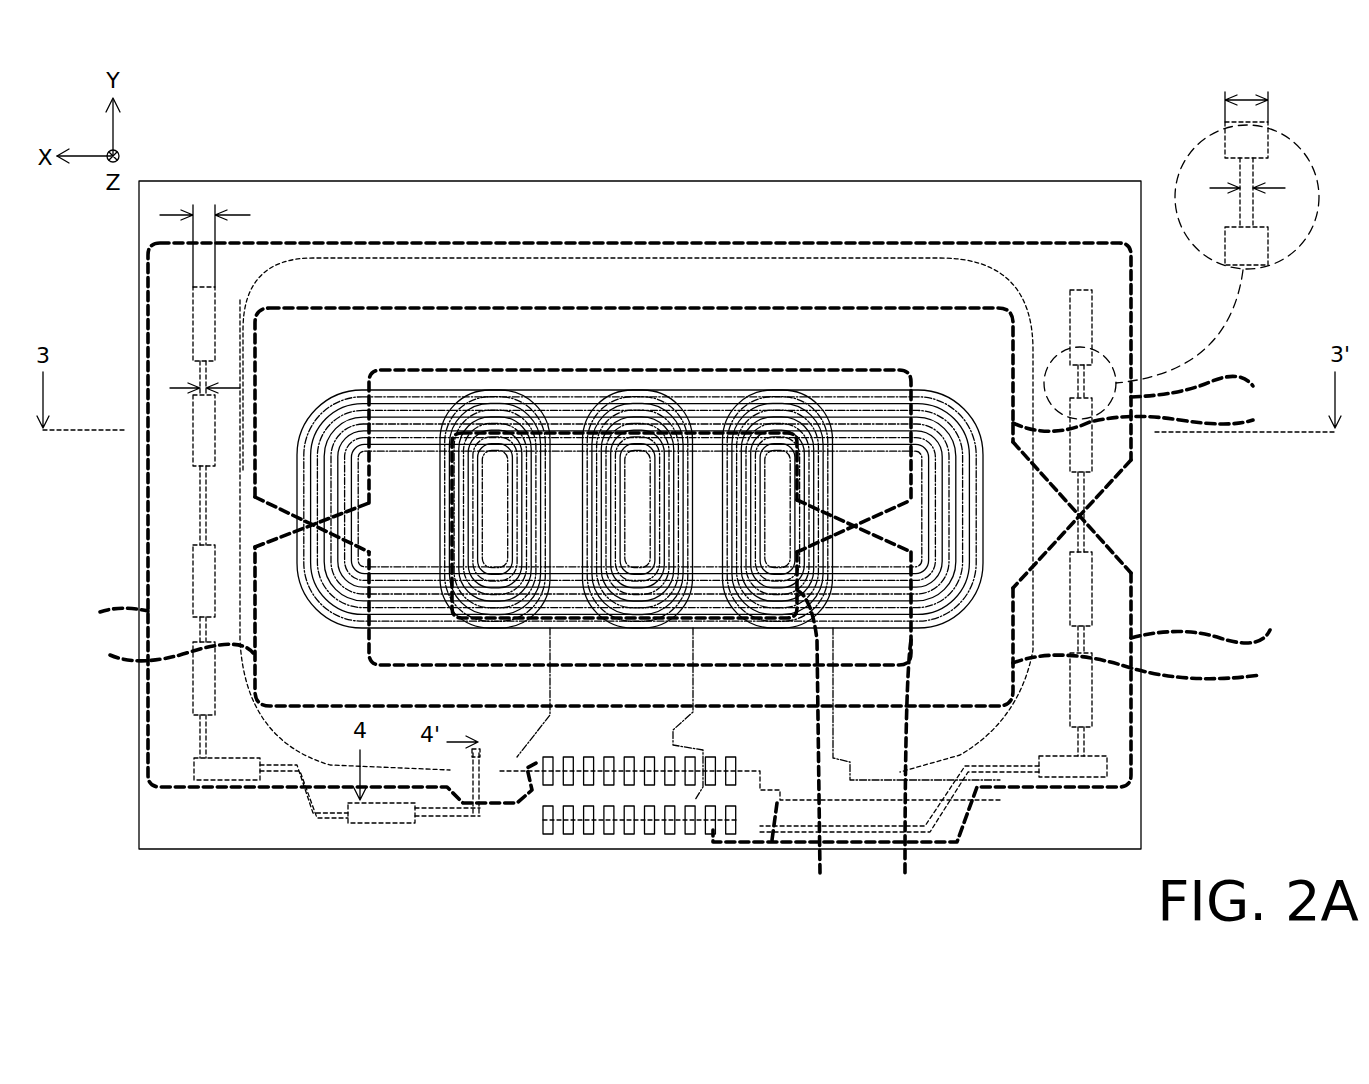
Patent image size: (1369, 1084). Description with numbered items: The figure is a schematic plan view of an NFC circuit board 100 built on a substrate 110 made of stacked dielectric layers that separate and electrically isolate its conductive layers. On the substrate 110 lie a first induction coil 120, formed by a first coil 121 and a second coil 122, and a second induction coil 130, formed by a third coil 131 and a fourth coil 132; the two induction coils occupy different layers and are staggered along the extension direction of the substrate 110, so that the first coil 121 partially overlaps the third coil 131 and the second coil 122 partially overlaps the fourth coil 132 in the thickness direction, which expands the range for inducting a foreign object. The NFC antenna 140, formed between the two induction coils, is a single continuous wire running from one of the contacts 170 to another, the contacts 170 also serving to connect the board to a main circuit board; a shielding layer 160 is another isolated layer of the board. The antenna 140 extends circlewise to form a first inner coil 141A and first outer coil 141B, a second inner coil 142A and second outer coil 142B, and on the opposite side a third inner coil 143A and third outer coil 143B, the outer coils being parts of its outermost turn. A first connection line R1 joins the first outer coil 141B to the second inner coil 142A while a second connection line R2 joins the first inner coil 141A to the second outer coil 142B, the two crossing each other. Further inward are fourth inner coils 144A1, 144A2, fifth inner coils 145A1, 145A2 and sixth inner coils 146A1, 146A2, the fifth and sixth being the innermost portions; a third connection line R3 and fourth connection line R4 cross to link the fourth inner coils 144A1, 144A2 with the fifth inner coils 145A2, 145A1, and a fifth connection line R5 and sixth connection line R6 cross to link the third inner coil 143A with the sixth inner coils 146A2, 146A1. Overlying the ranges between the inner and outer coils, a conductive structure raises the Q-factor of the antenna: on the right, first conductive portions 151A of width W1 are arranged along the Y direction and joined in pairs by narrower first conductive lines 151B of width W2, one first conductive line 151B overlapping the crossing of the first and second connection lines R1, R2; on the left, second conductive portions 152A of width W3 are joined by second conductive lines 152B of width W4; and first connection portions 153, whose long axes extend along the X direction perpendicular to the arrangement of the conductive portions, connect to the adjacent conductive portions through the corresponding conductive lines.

The NFC circuit board 100 is at (260, 124).
The substrate 110 is at (1141, 792).
The first induction coil 120 is at (706, 128).
The first coil 121 is at (693, 490).
The second coil 122 is at (925, 390).
The second induction coil 130 is at (590, 128).
The third coil 131 is at (408, 388).
The fourth coil 132 is at (578, 488).
The NFC antenna 140 is at (1005, 243).
The first inner coil 141A is at (1180, 418).
The first outer coil 141B is at (1225, 384).
The second inner coil 142A is at (1169, 671).
The second outer coil 142B is at (1233, 632).
The third inner coil 143A is at (149, 650).
The third outer coil 143B is at (94, 615).
The fourth inner coil 144A1 is at (900, 440).
The fourth inner coil 144A2 is at (911, 769).
The fifth inner coil 145A1 is at (797, 503).
The fifth inner coil 145A2 is at (814, 744).
The sixth inner coil 146A1 is at (363, 405).
The sixth inner coil 146A2 is at (370, 640).
The first conductive portion 151A is at (1095, 600).
The first conductive line 151B is at (1253, 205).
The second conductive portion 152A is at (190, 322).
The second conductive line 152B is at (195, 372).
The first connection portion 153 is at (227, 780).
The shielding layer 160 is at (507, 772).
The contacts 170 is at (548, 835).
The first connection line R1 is at (1095, 490).
The second connection line R2 is at (1060, 556).
The third connection line R3 is at (858, 506).
The fourth connection line R4 is at (870, 520).
The fifth connection line R5 is at (298, 497).
The sixth connection line R6 is at (298, 550).
The width of first conductive portion W1 is at (1246, 95).
The width of first conductive line W2 is at (1242, 175).
The width of second conductive portion W3 is at (205, 233).
The width of second conductive line W4 is at (206, 375).